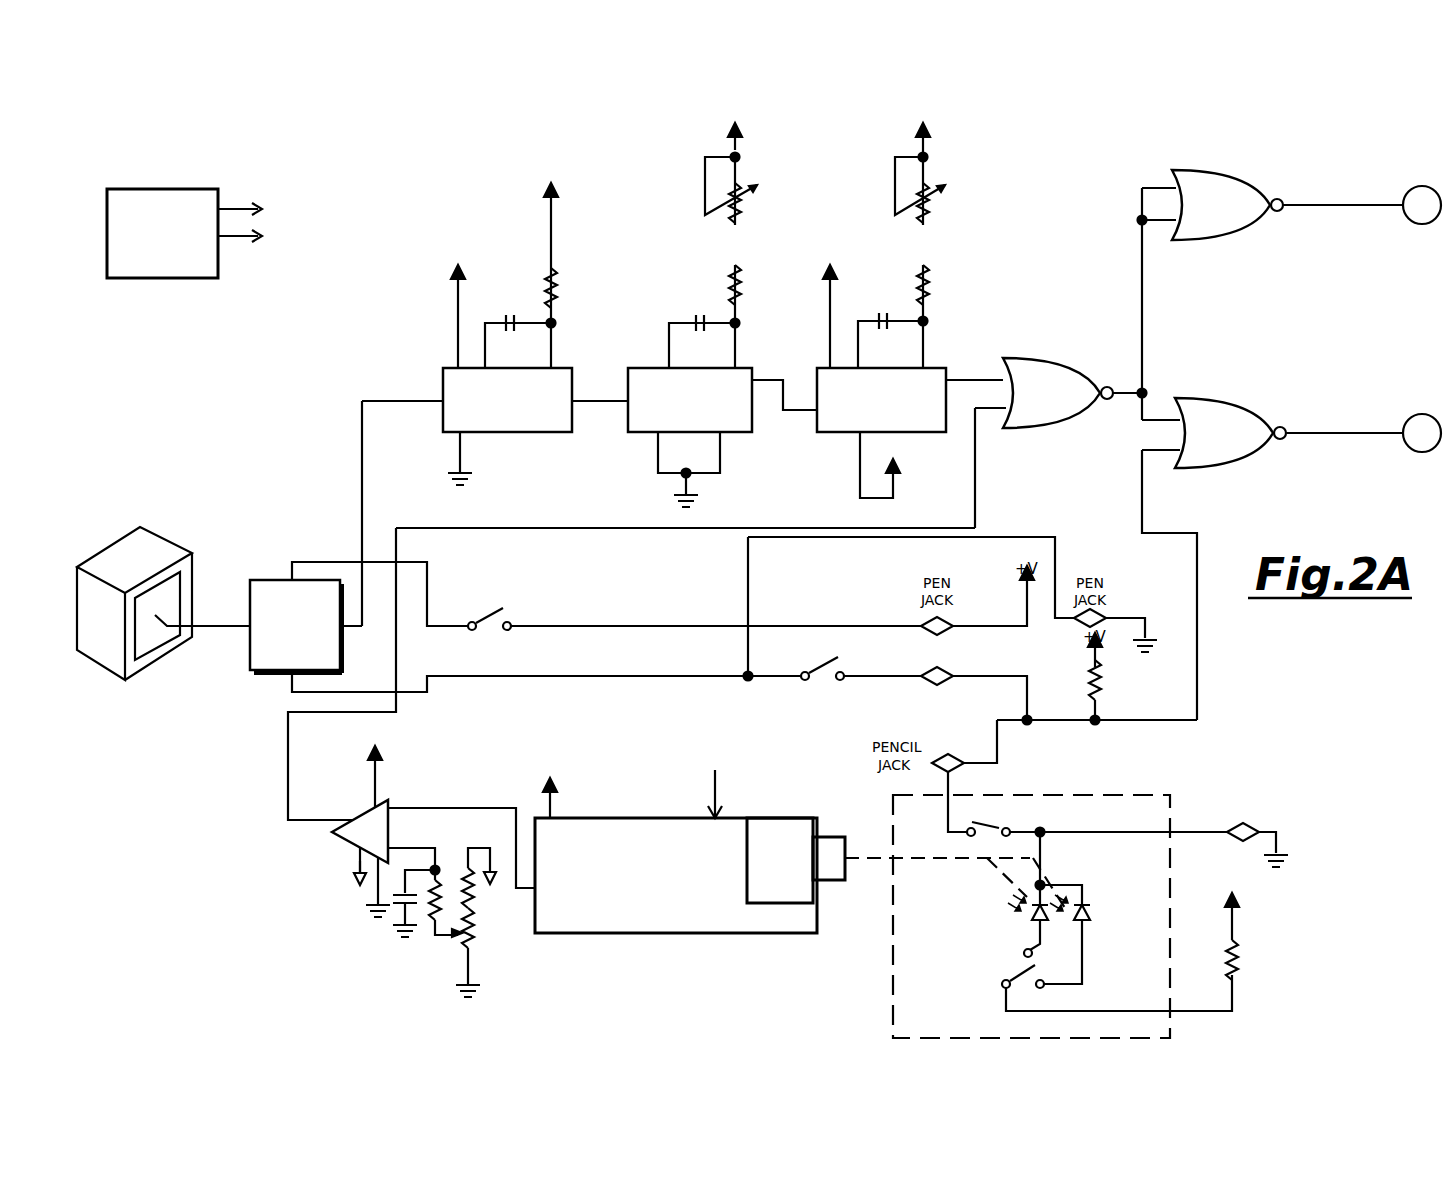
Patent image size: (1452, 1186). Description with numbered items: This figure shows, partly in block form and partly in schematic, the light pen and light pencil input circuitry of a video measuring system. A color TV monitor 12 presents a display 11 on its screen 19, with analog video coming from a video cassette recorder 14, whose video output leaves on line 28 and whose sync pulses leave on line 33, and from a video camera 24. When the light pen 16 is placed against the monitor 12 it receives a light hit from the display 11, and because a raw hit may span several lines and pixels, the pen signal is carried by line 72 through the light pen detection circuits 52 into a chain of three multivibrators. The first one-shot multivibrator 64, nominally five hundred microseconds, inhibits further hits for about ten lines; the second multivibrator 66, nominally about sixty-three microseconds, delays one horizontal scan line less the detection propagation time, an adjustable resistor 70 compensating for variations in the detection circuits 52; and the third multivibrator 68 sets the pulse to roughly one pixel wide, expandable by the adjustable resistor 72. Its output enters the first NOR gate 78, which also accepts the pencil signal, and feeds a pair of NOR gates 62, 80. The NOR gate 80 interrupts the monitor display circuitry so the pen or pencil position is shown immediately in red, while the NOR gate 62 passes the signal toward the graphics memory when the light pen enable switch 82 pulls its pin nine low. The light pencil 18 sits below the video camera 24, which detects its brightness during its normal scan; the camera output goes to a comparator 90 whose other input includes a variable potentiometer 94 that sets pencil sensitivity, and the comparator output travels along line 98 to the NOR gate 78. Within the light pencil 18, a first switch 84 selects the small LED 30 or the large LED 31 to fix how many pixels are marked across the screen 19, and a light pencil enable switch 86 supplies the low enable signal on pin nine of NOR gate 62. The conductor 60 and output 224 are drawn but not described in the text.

The display 11 is at (199, 608).
The color TV monitor 12 is at (134, 603).
The video cassette recorder 14 is at (182, 278).
The light pen 16 is at (218, 703).
The light pencil 18 is at (1180, 892).
The screen 19 is at (152, 652).
The video camera 24 is at (797, 818).
The line 28 is at (236, 238).
The small LED 30 is at (1090, 922).
The large LED 31 is at (1033, 922).
The line 33 is at (240, 207).
The light pen detection circuits 52 is at (577, 170).
The pencil signal line 60 is at (1197, 665).
The NOR gate 62 is at (1291, 559).
The first one-shot multivibrator 64 is at (510, 432).
The second multivibrator 66 is at (738, 432).
The third multivibrator 68 is at (912, 432).
The adjustable resistor 70 is at (745, 210).
The line / adjustable resistor 72 is at (360, 418).
The first NOR gate 78 is at (1061, 443).
The NOR gate 80 is at (1213, 294).
The light pen enable switch 82 is at (808, 688).
The first switch 84 is at (997, 826).
The light pencil enable switch 86 is at (1018, 976).
The comparator 90 is at (433, 839).
The variable potentiometer 94 is at (450, 957).
The line 98 is at (485, 530).
The output line A 224 is at (1344, 204).